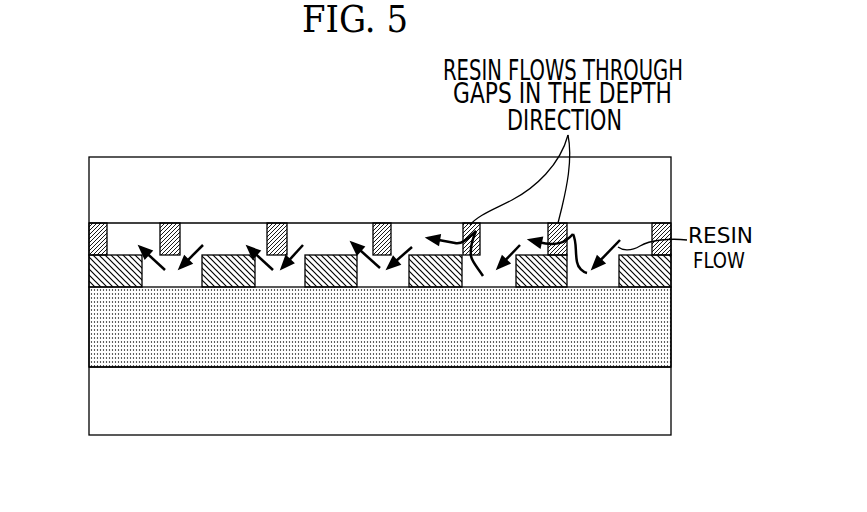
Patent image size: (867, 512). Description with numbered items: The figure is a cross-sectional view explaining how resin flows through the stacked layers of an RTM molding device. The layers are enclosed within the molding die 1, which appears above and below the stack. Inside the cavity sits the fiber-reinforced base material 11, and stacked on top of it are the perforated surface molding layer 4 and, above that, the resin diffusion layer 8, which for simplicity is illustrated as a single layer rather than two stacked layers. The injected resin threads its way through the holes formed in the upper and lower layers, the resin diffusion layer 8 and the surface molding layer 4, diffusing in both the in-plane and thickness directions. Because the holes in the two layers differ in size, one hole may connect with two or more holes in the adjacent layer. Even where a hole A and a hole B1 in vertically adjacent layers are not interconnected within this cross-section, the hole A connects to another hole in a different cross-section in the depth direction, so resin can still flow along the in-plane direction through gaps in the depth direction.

The molding die 1 is at (100, 192).
The resin diffusion layer 8 is at (89, 238).
The surface molding layer 4 is at (89, 272).
The fiber-reinforced base material 11 is at (100, 329).
The hole B1 is at (418, 233).
The hole A is at (491, 277).